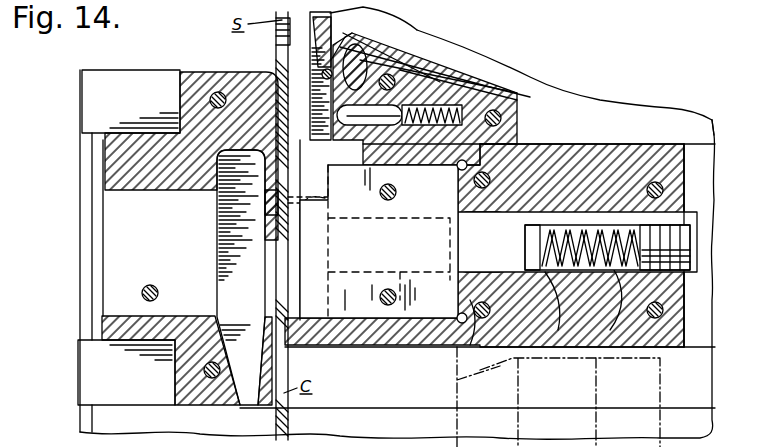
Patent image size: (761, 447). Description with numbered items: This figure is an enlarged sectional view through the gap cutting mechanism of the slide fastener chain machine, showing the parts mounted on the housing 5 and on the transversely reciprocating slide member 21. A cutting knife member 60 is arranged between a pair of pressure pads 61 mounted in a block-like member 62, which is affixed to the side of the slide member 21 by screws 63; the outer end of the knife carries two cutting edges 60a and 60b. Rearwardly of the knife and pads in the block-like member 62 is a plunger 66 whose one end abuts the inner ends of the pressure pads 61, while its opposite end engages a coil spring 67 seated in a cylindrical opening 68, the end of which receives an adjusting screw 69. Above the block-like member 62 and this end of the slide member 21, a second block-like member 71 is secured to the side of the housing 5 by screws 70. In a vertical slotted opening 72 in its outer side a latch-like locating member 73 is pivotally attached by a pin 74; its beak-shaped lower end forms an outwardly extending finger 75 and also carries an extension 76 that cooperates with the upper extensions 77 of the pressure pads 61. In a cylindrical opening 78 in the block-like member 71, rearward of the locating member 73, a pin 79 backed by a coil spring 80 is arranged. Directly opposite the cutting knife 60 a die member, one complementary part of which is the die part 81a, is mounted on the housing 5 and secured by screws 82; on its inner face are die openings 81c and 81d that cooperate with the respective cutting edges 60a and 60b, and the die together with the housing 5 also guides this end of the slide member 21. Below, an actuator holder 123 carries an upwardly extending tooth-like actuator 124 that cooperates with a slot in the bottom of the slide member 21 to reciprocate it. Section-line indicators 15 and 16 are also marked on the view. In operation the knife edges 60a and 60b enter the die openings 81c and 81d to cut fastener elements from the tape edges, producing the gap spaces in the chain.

The housing 5 is at (589, 102).
The direction arrow 15 is at (218, 46).
The direction arrow 16 is at (186, 251).
The slide member 21 is at (711, 123).
The cutting knife member 60 is at (403, 308).
The cutting edge 60a is at (298, 278).
The cutting edge 60b is at (285, 214).
The pressure pads 61 is at (545, 146).
The block-like member 62 is at (581, 146).
The screws 63 is at (660, 146).
The plunger 66 is at (470, 332).
The coil spring 67 is at (558, 330).
The cylindrical opening 68 is at (610, 330).
The adjusting screw 69 is at (690, 272).
The screws 70 is at (428, 57).
The block-like member 71 is at (432, 87).
The slotted opening 72 is at (380, 67).
The latch-like locating member 73 is at (353, 33).
The pin 74 is at (367, 43).
The finger 75 is at (306, 186).
The extension 76 is at (310, 205).
The upper extensions 77 is at (300, 241).
The cylindrical opening 78 is at (465, 88).
The pin 79 is at (395, 128).
The coil spring 80 is at (428, 128).
The die part 81a is at (190, 74).
The die opening 81c is at (276, 298).
The die opening 81d is at (276, 203).
The screws 82 is at (208, 100).
The actuator holder 123 is at (462, 434).
The actuator 124 is at (512, 360).